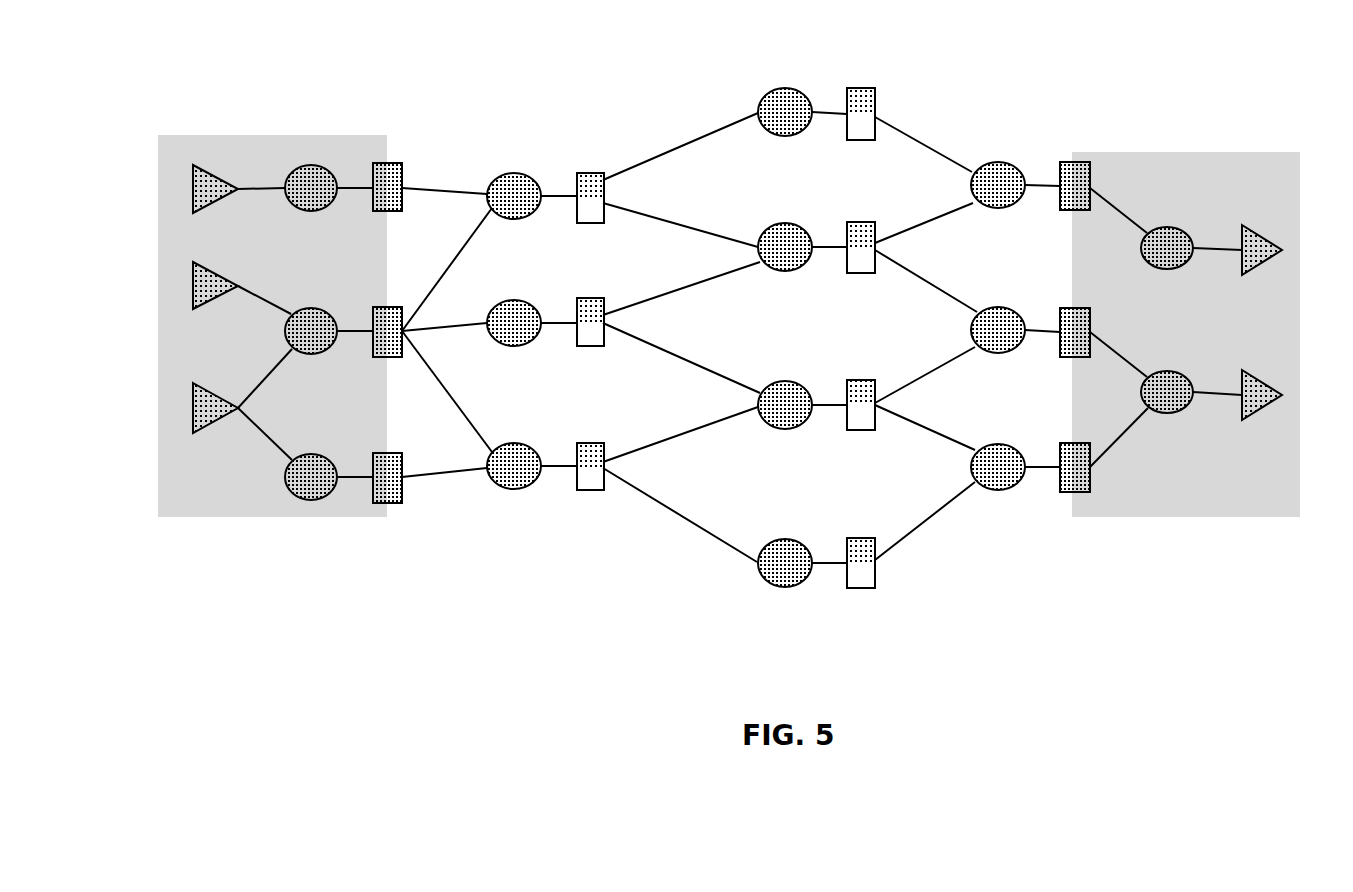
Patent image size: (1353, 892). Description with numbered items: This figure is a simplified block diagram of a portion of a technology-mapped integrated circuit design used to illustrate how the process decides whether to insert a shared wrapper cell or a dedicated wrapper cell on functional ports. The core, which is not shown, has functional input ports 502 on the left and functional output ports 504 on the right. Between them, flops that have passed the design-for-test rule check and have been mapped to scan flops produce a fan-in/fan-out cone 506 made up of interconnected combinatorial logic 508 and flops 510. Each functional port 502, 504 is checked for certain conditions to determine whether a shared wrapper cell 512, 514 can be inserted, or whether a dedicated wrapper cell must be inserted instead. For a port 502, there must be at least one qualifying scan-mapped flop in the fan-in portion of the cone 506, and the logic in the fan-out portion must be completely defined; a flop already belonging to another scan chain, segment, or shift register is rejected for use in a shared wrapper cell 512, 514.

The functional input ports 502 is at (195, 185).
The functional output ports 504 is at (1267, 370).
The fan-in/fan-out cone 506 is at (672, 103).
The combinatorial logic 508 is at (757, 422).
The flops 510 is at (877, 215).
The shared wrapper cell 512 is at (399, 157).
The shared wrapper cell 514 is at (1062, 495).